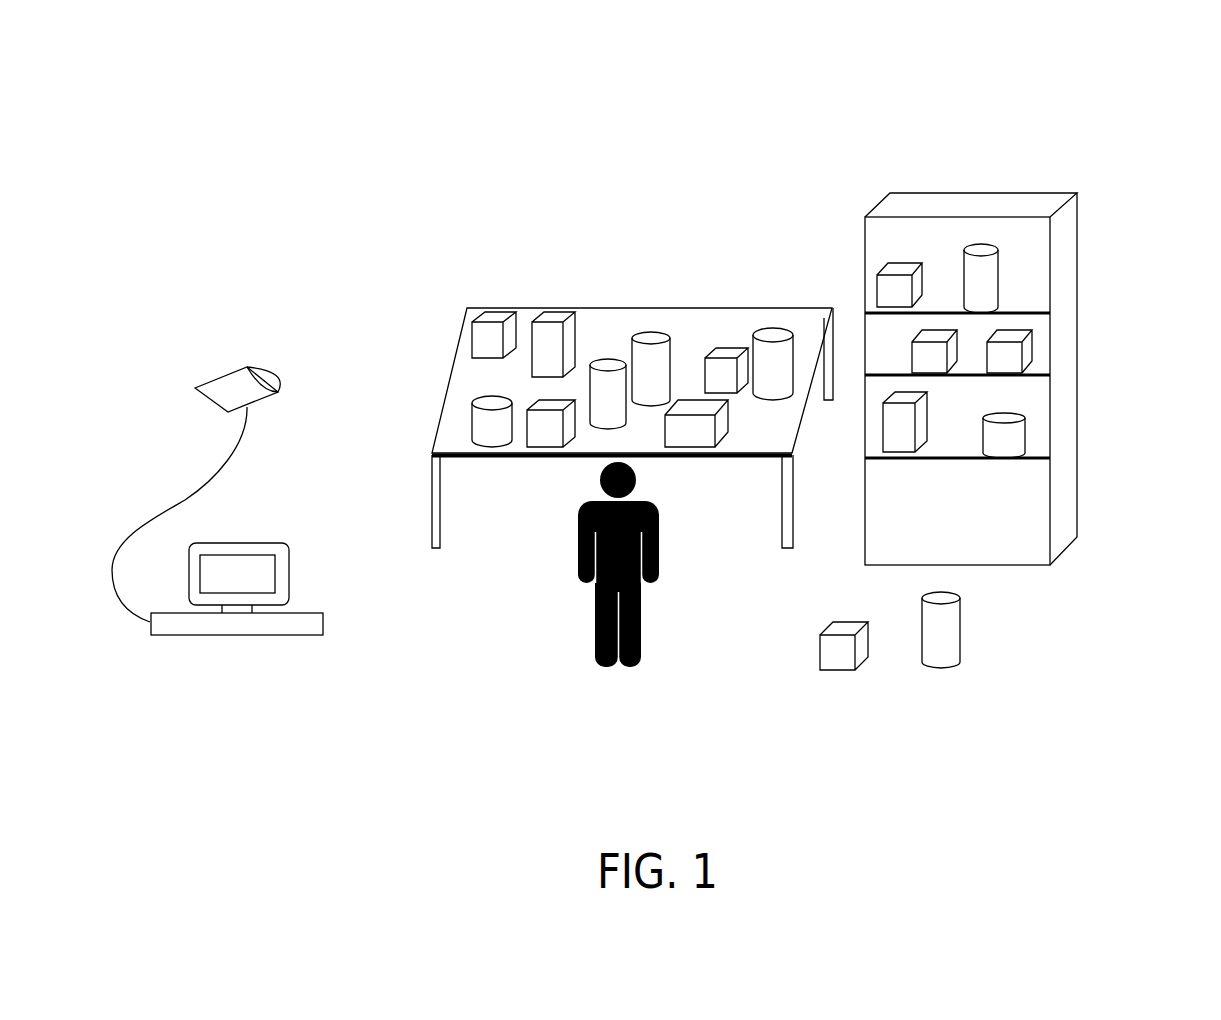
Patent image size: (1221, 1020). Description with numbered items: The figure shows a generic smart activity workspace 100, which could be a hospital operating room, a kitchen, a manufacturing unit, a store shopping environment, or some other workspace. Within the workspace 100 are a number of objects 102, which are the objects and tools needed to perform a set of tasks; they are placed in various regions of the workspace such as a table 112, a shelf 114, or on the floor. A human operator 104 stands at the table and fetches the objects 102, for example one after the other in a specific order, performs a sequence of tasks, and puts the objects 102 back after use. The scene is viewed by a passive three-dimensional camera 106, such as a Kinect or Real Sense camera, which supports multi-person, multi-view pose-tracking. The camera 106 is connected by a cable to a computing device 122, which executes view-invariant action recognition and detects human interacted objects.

The smart activity workspace 100 is at (277, 112).
The object 102 is at (1107, 497).
The human operator 104 is at (577, 545).
The 3D camera 106 is at (232, 390).
The table 112 is at (667, 308).
The shelf 114 is at (940, 216).
The computing device 122 is at (237, 572).